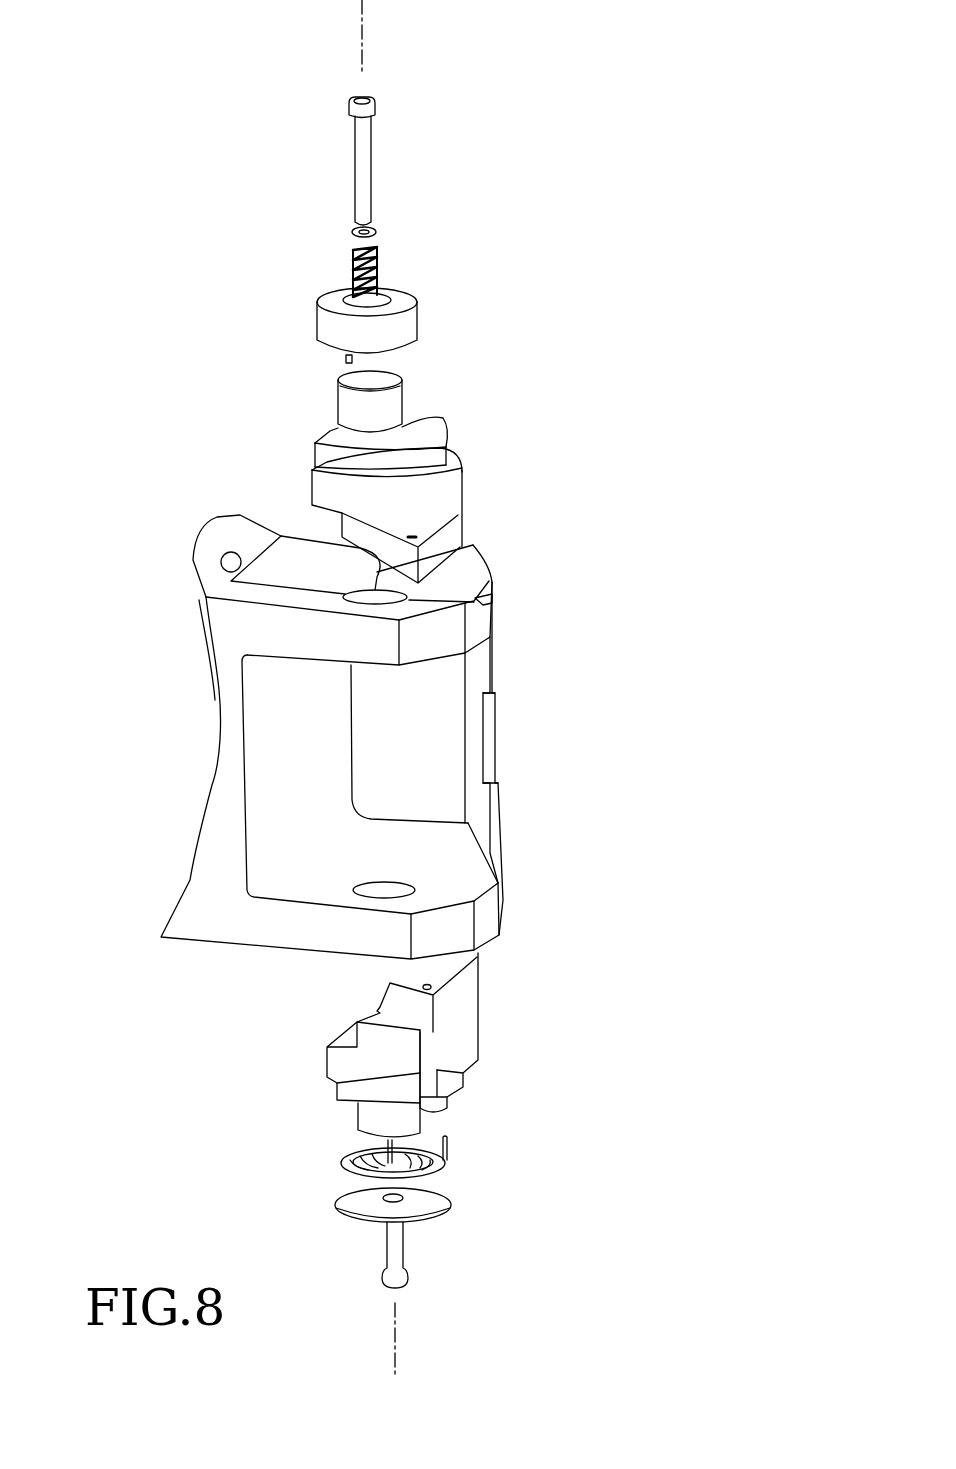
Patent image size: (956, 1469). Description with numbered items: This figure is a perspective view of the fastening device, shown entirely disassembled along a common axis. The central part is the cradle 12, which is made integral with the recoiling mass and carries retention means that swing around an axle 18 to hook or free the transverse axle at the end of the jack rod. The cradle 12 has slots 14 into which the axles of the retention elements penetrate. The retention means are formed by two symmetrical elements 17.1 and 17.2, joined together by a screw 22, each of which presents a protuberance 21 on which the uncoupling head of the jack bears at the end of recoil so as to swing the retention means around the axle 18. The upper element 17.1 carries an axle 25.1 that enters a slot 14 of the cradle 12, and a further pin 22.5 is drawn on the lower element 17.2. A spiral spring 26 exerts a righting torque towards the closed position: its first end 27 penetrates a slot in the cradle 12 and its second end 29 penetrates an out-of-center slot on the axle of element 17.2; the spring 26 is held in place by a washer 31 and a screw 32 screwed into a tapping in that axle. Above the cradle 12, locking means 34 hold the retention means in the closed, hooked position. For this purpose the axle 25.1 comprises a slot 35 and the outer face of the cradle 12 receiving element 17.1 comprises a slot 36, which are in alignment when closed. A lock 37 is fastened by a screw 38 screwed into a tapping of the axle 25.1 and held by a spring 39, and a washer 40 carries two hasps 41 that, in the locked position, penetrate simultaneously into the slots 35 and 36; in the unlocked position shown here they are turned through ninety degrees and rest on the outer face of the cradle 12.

The cradle 12 is at (588, 747).
The slots 14 is at (368, 597).
The element of retention means 17.1 is at (459, 462).
The element of retention means 17.2 is at (391, 1077).
The axle 18 is at (362, 38).
The protuberance 21 is at (415, 562).
The screw 22 is at (432, 1079).
The pin 22.5 is at (440, 1125).
The axle 25.1 is at (405, 385).
The spiral spring 26 is at (343, 1160).
The first end of spring 27 is at (455, 1150).
The second end of spring 29 is at (375, 1148).
The washer 31 is at (450, 1210).
The screw 32 is at (405, 1262).
The locking means 34 is at (470, 236).
The slot 35 is at (340, 375).
The slot 36 is at (482, 603).
The lock 37 is at (416, 315).
The screw 38 is at (372, 143).
The spring 39 is at (352, 262).
The washer 40 is at (350, 232).
The hasps 41 is at (345, 362).